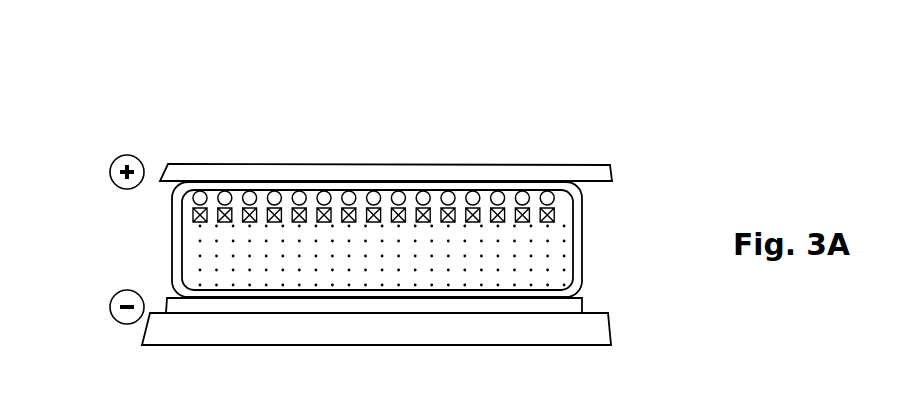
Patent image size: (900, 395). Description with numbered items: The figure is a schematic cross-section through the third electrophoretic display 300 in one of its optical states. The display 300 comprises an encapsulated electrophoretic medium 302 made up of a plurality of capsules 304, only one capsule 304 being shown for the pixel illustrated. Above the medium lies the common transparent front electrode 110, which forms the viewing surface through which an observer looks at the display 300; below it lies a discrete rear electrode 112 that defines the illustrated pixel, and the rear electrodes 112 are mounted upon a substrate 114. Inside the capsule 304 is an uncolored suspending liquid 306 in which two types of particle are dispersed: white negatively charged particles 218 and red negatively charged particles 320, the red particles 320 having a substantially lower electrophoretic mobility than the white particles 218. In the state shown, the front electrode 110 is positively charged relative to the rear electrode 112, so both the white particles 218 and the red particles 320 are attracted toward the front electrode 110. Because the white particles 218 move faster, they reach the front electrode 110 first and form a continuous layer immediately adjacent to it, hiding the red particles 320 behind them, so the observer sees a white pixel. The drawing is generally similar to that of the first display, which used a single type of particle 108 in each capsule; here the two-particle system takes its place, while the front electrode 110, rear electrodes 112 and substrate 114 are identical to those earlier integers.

The third electrophoretic display 300 is at (187, 142).
The front electrode 110 is at (415, 165).
The encapsulated electrophoretic medium 302 is at (597, 209).
The capsule 304 is at (583, 247).
The white particles 218 is at (272, 192).
The red particles 320 is at (193, 215).
The liquid 306 is at (495, 247).
The particles 108 is at (348, 283).
The rear electrode 112 is at (584, 298).
The substrate 114 is at (610, 320).